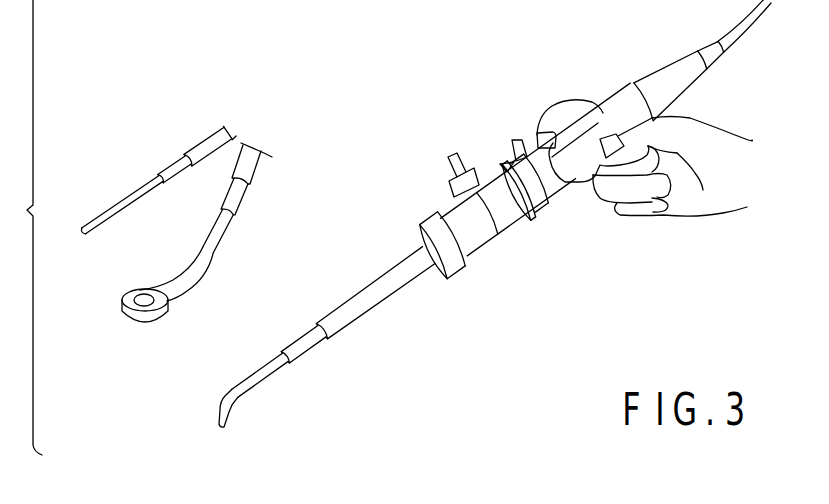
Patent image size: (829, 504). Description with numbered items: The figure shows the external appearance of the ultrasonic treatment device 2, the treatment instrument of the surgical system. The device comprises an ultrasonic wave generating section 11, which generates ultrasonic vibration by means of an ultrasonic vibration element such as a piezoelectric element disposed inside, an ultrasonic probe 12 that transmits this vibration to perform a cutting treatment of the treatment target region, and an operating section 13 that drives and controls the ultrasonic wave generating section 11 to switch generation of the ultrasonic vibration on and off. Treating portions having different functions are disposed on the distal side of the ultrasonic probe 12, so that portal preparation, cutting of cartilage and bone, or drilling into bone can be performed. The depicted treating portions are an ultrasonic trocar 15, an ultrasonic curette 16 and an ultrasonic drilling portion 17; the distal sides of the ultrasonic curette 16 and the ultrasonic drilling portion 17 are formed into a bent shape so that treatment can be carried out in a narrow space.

The ultrasonic treatment device 2 is at (618, 90).
The ultrasonic wave generating section 11 is at (600, 127).
The ultrasonic probe 12 is at (353, 325).
The operating section 13 is at (537, 143).
The ultrasonic trocar 15 is at (95, 222).
The ultrasonic curette 16 is at (142, 298).
The ultrasonic drilling portion 17 is at (224, 400).